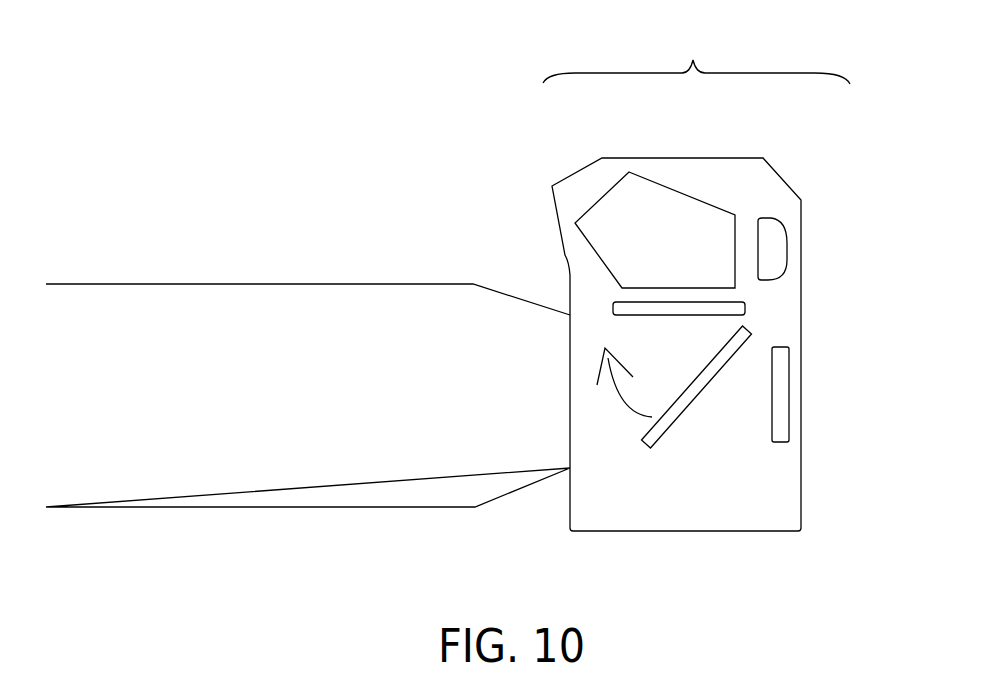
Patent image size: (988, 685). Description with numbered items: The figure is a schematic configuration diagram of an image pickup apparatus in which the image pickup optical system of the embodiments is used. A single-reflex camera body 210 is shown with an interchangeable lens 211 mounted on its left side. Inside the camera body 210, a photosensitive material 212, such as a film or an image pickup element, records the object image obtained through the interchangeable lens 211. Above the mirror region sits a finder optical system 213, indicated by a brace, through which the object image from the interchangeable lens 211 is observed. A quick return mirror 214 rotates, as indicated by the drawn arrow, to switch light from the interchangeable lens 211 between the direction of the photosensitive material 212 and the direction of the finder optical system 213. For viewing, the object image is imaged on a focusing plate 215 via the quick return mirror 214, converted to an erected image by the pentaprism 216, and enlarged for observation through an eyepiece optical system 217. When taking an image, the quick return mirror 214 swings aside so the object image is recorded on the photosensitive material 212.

The single-reflex camera body 210 is at (755, 504).
The interchangeable lens 211 is at (343, 478).
The photosensitive material 212 is at (788, 420).
The finder optical system 213 is at (696, 48).
The quick return mirror 214 is at (668, 445).
The focusing plate 215 is at (647, 305).
The pentaprism 216 is at (667, 214).
The eyepiece optical system 217 is at (772, 237).